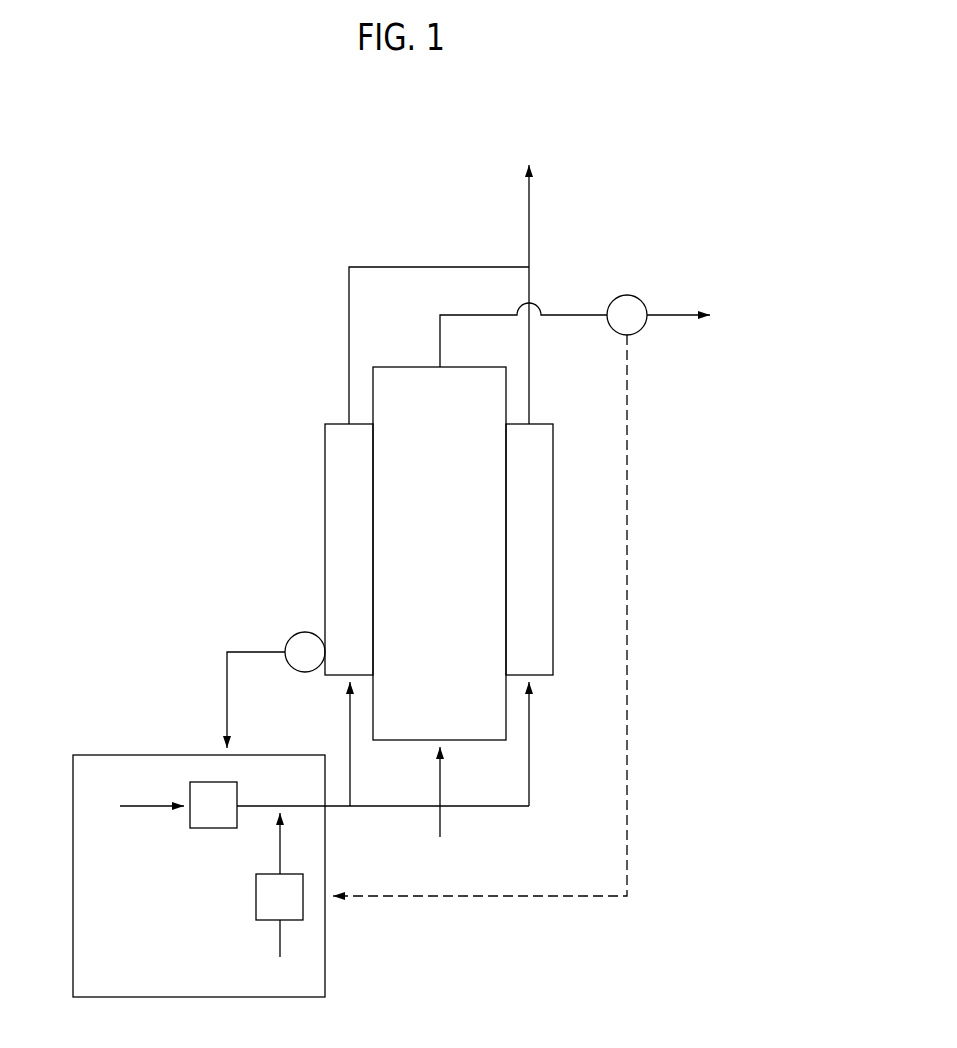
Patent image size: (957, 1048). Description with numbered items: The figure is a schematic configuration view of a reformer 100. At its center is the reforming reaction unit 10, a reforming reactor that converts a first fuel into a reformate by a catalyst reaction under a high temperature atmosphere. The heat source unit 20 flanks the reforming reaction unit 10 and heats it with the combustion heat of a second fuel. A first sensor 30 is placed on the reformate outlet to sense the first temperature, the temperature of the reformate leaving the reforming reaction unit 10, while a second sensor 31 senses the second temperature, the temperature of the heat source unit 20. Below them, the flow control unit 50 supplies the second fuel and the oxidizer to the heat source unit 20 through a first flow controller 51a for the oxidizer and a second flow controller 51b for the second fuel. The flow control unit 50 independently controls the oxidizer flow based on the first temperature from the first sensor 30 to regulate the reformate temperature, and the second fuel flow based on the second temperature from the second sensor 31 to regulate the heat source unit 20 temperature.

The reformer 100 is at (246, 202).
The reforming reaction unit 10 is at (373, 374).
The heat source unit 20 is at (325, 466).
The first sensor 30 is at (644, 330).
The second sensor 31 is at (290, 638).
The flow control unit 50 is at (143, 755).
The first flow controller 51a is at (303, 912).
The second flow controller 51b is at (214, 782).